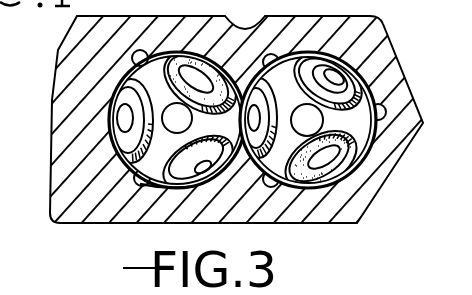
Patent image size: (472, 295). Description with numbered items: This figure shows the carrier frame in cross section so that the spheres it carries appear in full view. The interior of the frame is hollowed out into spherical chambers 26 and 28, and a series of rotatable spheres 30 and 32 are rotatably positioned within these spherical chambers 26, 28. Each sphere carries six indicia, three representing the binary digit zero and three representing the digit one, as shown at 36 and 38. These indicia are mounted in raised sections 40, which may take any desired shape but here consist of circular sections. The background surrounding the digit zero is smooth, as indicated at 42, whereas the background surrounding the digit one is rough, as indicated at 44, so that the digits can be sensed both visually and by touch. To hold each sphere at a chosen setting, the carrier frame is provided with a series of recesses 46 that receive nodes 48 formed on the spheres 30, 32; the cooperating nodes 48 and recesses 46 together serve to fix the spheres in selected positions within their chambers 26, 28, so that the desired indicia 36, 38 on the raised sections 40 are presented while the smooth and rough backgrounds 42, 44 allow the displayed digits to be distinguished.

The spherical chamber 26 is at (336, 55).
The spherical chamber 28 is at (191, 17).
The rotatable sphere 30 is at (358, 130).
The rotatable sphere 32 is at (158, 74).
The indicia representing binary digit 0 36 is at (123, 122).
The indicia representing digit 1 38 is at (333, 158).
The raised section 40 is at (170, 183).
The smooth indicia background 42 is at (125, 150).
The rough indicia background 44 is at (308, 176).
The recess 46 is at (165, 57).
The node 48 is at (278, 60).